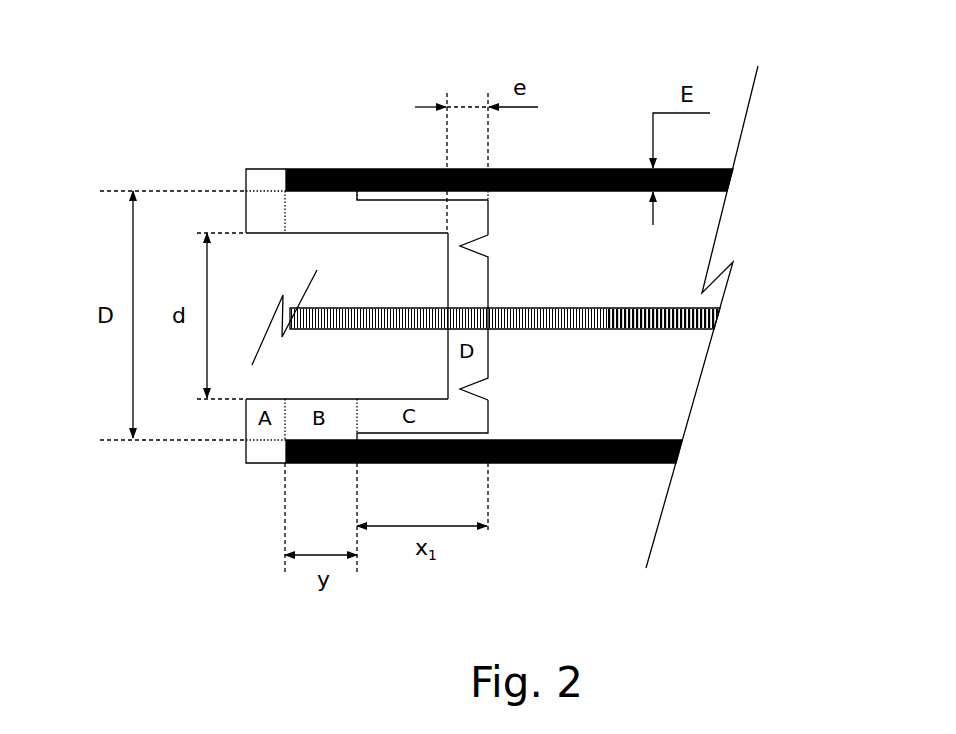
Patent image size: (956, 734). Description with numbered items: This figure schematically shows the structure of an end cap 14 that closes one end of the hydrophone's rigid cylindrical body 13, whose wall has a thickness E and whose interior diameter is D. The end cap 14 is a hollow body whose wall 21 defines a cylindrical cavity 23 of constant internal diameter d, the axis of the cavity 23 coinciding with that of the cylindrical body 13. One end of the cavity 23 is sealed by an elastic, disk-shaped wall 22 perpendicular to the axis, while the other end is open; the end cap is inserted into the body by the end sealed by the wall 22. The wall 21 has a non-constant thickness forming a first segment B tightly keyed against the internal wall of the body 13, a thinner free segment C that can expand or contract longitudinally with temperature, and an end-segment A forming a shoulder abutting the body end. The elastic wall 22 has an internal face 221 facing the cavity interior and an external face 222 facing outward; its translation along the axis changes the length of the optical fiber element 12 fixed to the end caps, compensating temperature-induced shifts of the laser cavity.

The optical fiber element 12 is at (495, 352).
The cylindrical body 13 is at (509, 120).
The end cap 14 is at (406, 351).
The wall 21 is at (405, 126).
The elastic wall 22 is at (464, 320).
The cylindrical cavity 23 is at (347, 251).
The internal face 221 is at (490, 358).
The external face 222 is at (446, 366).